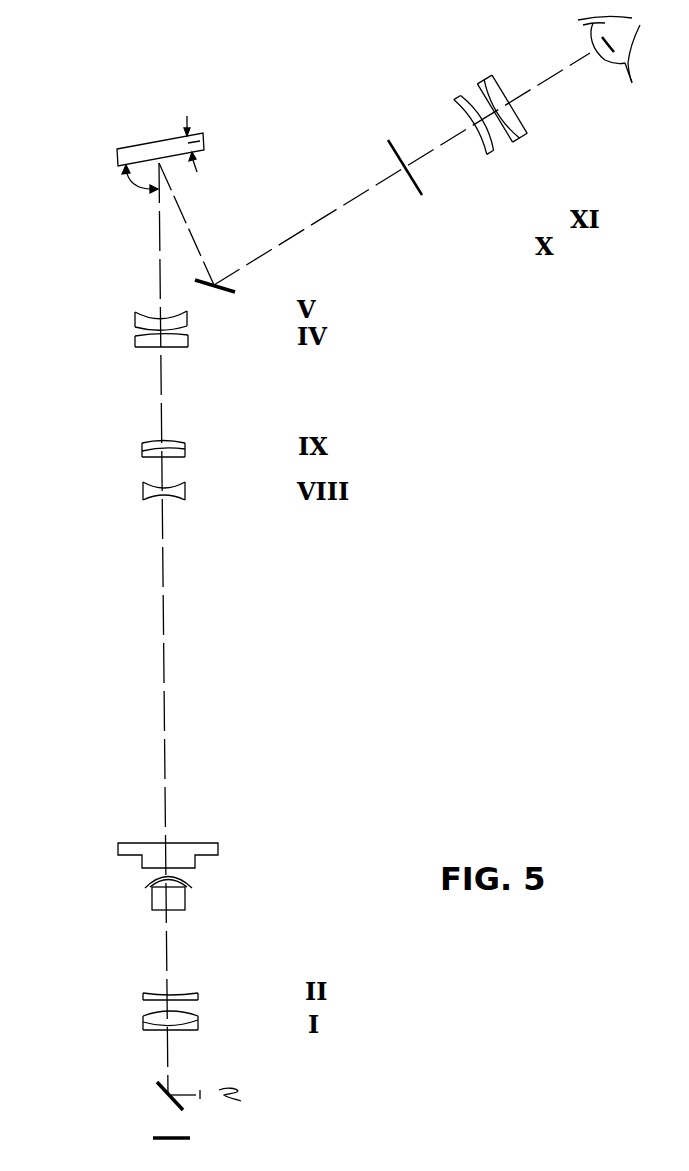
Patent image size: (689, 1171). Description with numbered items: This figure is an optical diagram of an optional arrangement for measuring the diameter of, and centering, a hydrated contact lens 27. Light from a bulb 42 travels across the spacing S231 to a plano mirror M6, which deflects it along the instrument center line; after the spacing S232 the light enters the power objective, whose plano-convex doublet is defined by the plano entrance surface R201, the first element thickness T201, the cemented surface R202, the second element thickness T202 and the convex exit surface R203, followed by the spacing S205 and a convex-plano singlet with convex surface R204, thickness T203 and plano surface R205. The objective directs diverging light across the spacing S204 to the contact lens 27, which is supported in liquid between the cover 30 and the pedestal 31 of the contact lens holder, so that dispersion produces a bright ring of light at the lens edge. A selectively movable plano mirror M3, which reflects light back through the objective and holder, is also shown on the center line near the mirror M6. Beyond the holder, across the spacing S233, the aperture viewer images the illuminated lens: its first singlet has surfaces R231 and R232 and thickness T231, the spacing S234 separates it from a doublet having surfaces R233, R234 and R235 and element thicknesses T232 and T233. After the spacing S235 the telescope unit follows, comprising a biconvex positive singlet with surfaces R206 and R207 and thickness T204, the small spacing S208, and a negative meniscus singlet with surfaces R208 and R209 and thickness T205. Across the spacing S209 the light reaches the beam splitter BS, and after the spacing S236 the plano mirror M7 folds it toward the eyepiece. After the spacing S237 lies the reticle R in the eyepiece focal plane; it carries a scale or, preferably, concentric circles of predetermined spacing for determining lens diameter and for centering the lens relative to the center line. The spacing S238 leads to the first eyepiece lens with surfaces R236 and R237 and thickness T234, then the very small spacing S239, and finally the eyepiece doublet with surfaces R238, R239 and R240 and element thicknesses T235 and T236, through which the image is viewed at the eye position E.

The beam splitter BS is at (117, 156).
The spacing S236 is at (178, 207).
The spacing S209 is at (158, 243).
The plano mirror M7 is at (198, 280).
The lens thickness T205 is at (150, 312).
The spacing S208 is at (160, 332).
The lens thickness T204 is at (148, 345).
The spacing S235 is at (158, 377).
The lens surface radius R209 is at (182, 314).
The lens surface radius R208 is at (182, 326).
The lens surface radius R207 is at (185, 334).
The lens surface radius R206 is at (177, 347).
The lens surface radius R235 is at (173, 441).
The lens thickness T233 is at (162, 443).
The lens surface radius R234 is at (182, 448).
The lens thickness T232 is at (160, 456).
The lens surface radius R233 is at (185, 461).
The spacing S234 is at (160, 473).
The lens surface radius R232 is at (180, 480).
The lens thickness T231 is at (162, 498).
The lens surface radius R231 is at (177, 500).
The spacing S233 is at (166, 628).
The cover 30 is at (128, 843).
The contact lens 27 is at (145, 878).
The pedestal 31 is at (152, 898).
The spacing S204 is at (168, 930).
The lens surface radius R205 is at (182, 993).
The lens thickness T203 is at (170, 993).
The lens surface radius R204 is at (190, 1000).
The spacing S205 is at (165, 1004).
The lens surface radius R203 is at (193, 1015).
The lens thickness T202 is at (148, 1016).
The lens surface radius R202 is at (193, 1026).
The lens thickness T201 is at (167, 1032).
The lens surface radius R201 is at (180, 1030).
The spacing S232 is at (170, 1057).
The plano mirror M6 is at (158, 1090).
The spacing S231 is at (200, 1099).
The bulb 42 is at (241, 1101).
The plano mirror M3 is at (157, 1137).
The spacing S237 is at (360, 193).
The reticle R is at (423, 197).
The spacing S238 is at (440, 148).
The lens thickness T234 is at (463, 123).
The lens surface radius R236 is at (477, 152).
The lens surface radius R237 is at (492, 152).
The spacing S239 is at (478, 108).
The lens thickness T235 is at (487, 86).
The lens surface radius R238 is at (495, 146).
The lens surface radius R239 is at (521, 128).
The lens thickness T236 is at (507, 98).
The lens surface radius R240 is at (523, 113).
The eye E is at (637, 48).